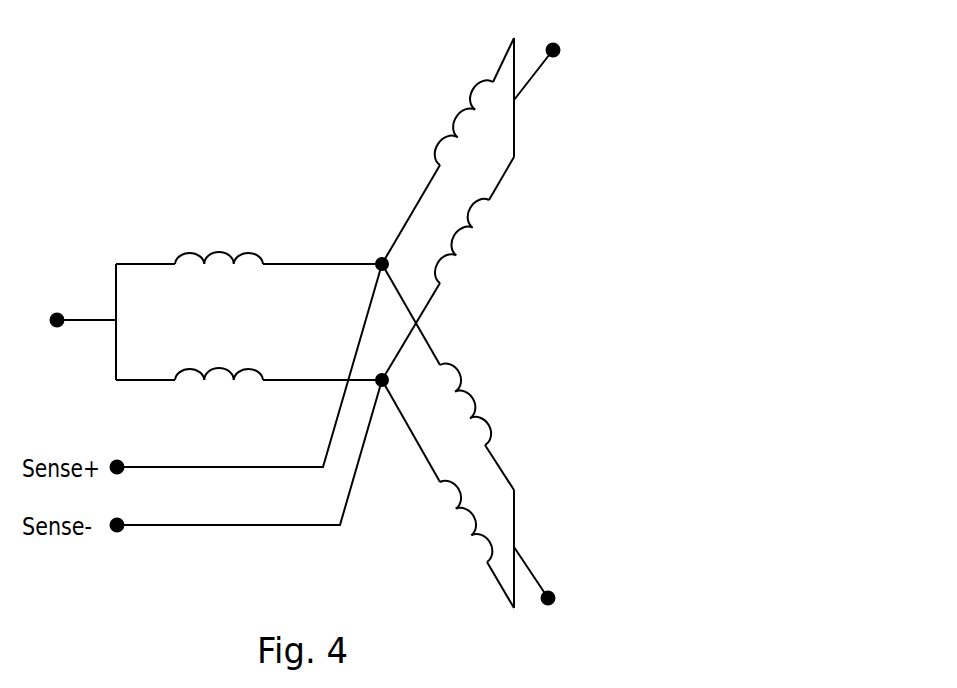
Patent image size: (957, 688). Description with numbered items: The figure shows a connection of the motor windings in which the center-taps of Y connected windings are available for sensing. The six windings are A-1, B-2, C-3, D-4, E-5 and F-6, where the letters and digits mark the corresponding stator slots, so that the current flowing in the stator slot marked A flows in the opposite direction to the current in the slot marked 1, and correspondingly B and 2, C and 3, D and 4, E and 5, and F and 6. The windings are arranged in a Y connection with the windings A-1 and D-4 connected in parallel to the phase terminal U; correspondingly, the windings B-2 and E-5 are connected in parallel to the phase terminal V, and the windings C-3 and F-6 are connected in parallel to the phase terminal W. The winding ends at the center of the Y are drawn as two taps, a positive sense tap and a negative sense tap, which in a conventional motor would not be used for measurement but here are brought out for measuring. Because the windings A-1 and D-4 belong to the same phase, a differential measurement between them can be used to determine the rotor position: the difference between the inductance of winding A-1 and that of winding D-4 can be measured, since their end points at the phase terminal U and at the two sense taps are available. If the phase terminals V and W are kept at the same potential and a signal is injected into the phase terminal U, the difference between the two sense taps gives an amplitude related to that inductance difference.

The stator slot 1 is at (322, 247).
The stator slot 2 is at (411, 321).
The stator slot 3 is at (417, 314).
The stator slot 4 is at (322, 362).
The stator slot 5 is at (411, 205).
The stator slot 6 is at (417, 431).
The stator slot A is at (206, 249).
The stator slot B is at (474, 216).
The stator slot C is at (477, 427).
The stator slot D is at (205, 362).
The stator slot E is at (474, 101).
The stator slot F is at (477, 544).
The phase terminal U is at (98, 322).
The phase terminal V is at (551, 85).
The phase terminal W is at (553, 565).